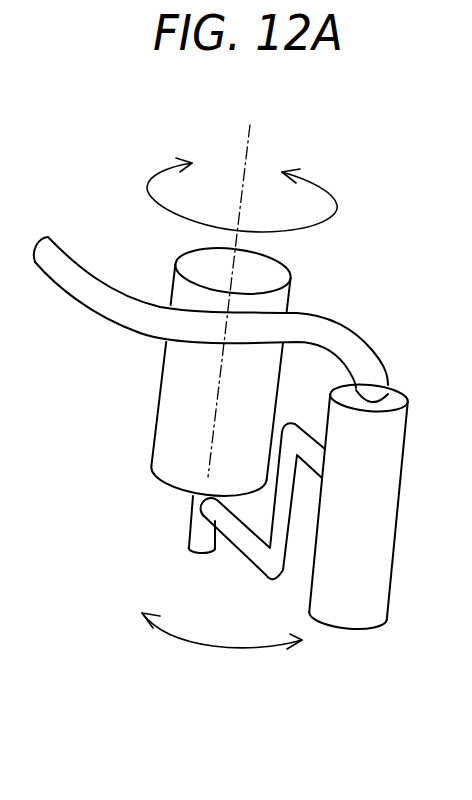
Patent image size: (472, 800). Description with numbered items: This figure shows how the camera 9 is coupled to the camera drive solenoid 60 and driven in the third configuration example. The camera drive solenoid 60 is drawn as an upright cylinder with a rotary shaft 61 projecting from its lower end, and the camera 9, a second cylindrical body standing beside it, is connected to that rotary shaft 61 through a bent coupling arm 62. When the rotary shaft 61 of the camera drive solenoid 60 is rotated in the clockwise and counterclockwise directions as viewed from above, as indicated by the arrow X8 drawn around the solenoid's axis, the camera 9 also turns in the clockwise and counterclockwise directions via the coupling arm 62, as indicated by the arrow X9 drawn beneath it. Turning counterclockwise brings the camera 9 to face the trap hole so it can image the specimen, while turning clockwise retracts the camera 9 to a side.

The camera 9 is at (360, 575).
The camera drive solenoid 60 is at (188, 392).
The rotary shaft 61 is at (193, 528).
The coupling arm 62 is at (250, 545).
The arrow x8 X8 is at (160, 173).
The arrow x9 X9 is at (197, 640).